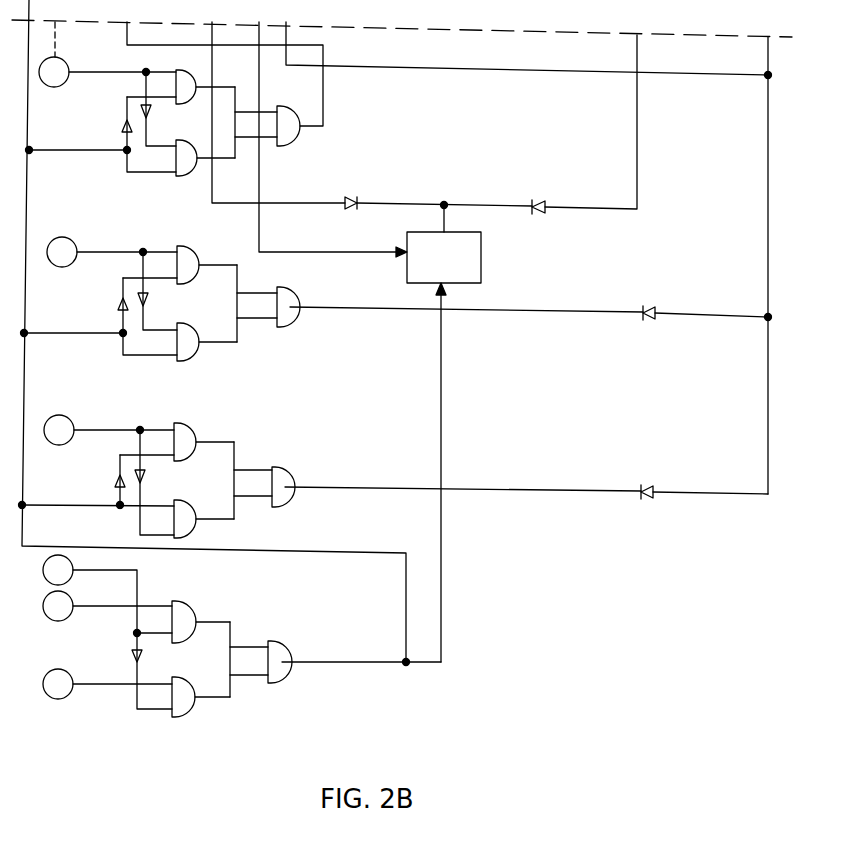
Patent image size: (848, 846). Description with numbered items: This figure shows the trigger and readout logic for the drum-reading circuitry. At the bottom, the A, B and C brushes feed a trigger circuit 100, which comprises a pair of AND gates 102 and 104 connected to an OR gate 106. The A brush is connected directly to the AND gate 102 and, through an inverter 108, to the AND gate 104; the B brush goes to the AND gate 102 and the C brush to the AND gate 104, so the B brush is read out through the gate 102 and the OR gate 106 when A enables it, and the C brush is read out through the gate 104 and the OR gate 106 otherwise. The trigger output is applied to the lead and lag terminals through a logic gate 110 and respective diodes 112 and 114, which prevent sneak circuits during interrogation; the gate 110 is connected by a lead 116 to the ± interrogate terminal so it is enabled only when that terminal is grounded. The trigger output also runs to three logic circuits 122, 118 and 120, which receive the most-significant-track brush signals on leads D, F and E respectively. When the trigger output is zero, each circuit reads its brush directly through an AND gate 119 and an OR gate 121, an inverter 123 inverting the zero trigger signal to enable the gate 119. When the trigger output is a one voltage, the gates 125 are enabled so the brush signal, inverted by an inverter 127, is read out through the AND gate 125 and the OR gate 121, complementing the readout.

The trigger circuit 100 is at (126, 632).
The AND gate 102 is at (208, 615).
The AND gate 104 is at (190, 714).
The OR gate 106 is at (335, 659).
The inverter 108 is at (111, 656).
The logic gate 110 is at (424, 265).
The diode 112 is at (365, 191).
The diode 114 is at (542, 193).
The lead 116 is at (333, 157).
The logic circuit 118 is at (99, 314).
The AND gate 119 is at (194, 253).
The logic circuit 120 is at (97, 446).
The OR gate 121 is at (438, 303).
The logic circuit 122 is at (101, 102).
The inverter 123 is at (93, 295).
The AND gate 125 is at (210, 534).
The inverter 127 is at (167, 303).